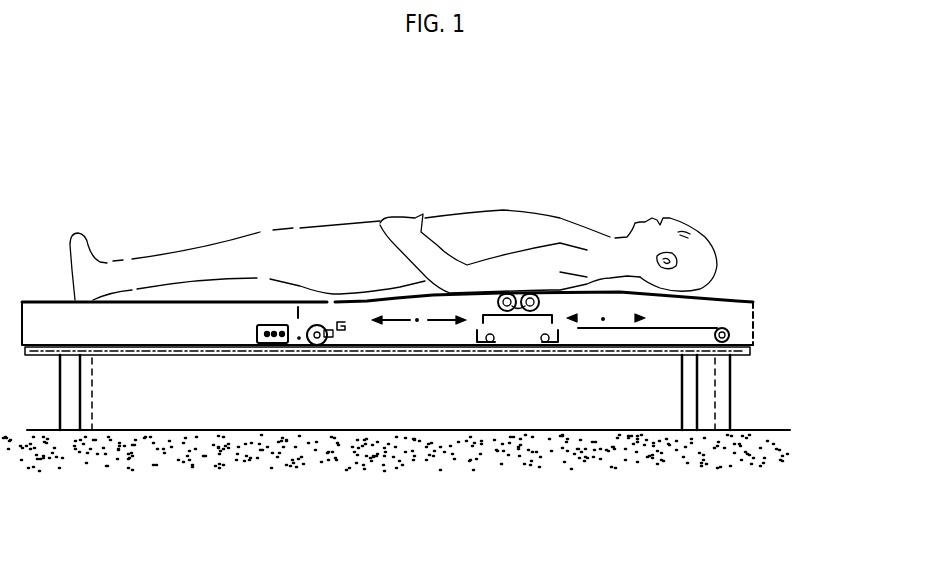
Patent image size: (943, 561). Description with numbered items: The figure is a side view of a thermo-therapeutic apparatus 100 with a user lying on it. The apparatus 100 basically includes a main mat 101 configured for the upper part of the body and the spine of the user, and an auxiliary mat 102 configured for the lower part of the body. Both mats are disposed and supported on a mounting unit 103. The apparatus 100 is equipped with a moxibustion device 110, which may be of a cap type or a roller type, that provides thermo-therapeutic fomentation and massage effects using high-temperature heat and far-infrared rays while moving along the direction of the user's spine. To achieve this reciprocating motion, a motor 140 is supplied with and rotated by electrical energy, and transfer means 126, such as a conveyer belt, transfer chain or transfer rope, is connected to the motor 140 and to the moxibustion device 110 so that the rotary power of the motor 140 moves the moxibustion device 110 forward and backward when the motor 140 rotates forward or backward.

The thermo-therapeutic apparatus 100 is at (437, 73).
The main mat 101 is at (727, 313).
The auxiliary mat 102 is at (183, 326).
The mounting unit 103 is at (398, 350).
The moxibustion device 110 is at (513, 322).
The transfer means 126 is at (630, 329).
The motor 140 is at (272, 343).